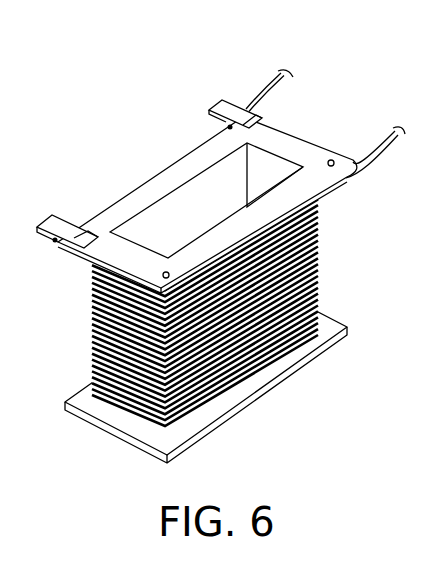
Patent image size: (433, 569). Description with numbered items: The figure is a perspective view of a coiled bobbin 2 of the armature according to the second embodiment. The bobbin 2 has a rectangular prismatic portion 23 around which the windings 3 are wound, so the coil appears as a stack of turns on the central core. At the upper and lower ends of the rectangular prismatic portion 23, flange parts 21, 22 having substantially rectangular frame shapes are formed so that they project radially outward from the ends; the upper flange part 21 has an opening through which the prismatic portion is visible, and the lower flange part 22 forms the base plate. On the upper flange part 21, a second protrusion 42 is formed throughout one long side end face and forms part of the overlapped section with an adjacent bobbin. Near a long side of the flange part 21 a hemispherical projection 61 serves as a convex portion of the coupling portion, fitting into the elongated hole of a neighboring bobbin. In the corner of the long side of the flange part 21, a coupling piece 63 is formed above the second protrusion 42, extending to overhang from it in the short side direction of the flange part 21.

The bobbin 2 is at (211, 263).
The windings 3 is at (321, 247).
The flange part 21 is at (211, 198).
The flange part 22 is at (311, 365).
The rectangular prismatic portion 23 is at (166, 217).
The second protrusion 42 is at (54, 241).
The hemispherical projection 61 is at (333, 160).
The coupling piece 63 is at (231, 109).